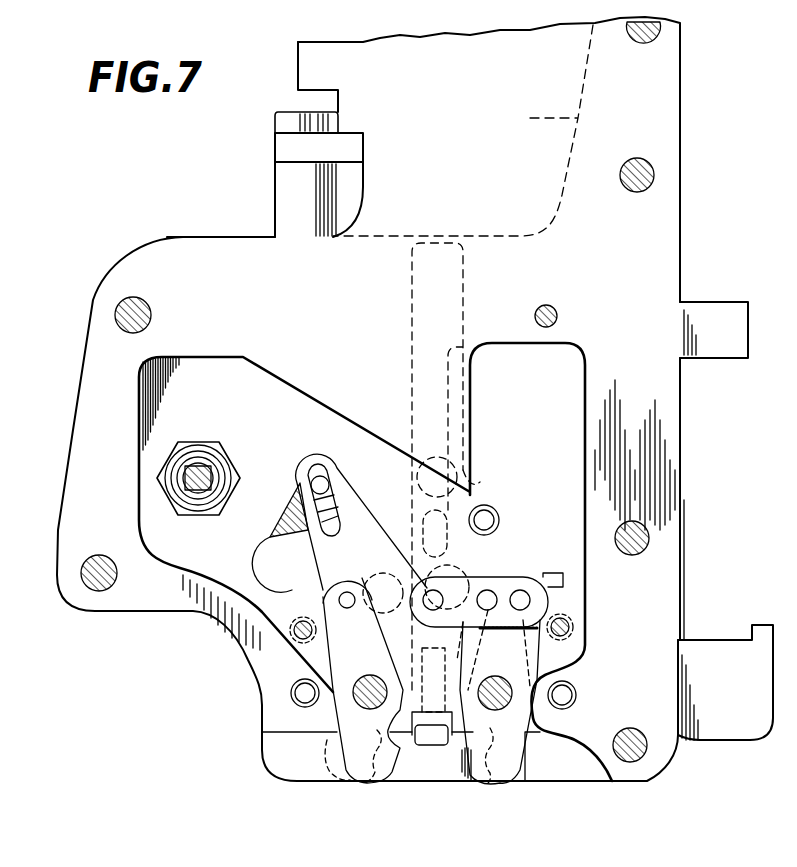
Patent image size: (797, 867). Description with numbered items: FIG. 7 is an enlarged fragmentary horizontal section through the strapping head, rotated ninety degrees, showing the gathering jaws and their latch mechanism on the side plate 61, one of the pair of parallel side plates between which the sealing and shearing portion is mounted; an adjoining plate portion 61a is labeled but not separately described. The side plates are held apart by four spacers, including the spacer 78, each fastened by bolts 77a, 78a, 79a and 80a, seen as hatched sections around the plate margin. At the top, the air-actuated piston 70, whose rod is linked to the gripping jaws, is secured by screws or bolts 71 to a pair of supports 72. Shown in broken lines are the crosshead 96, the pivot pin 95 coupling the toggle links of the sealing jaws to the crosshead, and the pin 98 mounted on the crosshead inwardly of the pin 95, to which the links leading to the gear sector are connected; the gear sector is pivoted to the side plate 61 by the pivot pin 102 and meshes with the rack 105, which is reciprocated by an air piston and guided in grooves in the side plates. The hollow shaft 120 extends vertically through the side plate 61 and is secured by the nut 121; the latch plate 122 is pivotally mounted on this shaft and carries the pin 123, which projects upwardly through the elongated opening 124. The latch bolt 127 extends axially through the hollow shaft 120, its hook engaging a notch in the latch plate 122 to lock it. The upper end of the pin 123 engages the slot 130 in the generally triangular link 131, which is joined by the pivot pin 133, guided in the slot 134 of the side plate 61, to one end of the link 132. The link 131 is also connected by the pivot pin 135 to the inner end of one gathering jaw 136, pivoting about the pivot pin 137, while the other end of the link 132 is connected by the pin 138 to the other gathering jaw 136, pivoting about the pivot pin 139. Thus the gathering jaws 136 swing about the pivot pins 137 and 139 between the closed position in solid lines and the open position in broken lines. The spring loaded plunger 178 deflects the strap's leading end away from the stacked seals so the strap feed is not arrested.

The side plate 61 is at (243, 370).
The cover plate 61a is at (185, 250).
The air-actuated piston 70 is at (306, 62).
The screws or bolts 71 is at (288, 117).
The supports 72 is at (288, 193).
The bolts 77a is at (648, 30).
The spacer 78 is at (708, 645).
The bolts 78a is at (640, 541).
The bolts 79a is at (120, 300).
The bolts 80a is at (100, 585).
The pivot pin 95 is at (464, 488).
The crosshead 96 is at (412, 307).
The pin 98 is at (432, 462).
The pivot pin 102 is at (500, 523).
The rack 105 is at (720, 310).
The hollow shaft 120 is at (195, 458).
The nut 121 is at (222, 468).
The latch plate 122 is at (292, 520).
The pin 123 is at (310, 485).
The elongated opening 124 is at (268, 556).
The latch bolt 127 is at (205, 500).
The slot 130 is at (318, 462).
The link 131 is at (360, 500).
The link 132 is at (487, 590).
The pivot pin 133 is at (430, 592).
The slot 134 is at (425, 541).
The pivot pin 135 is at (339, 599).
The gathering jaws 136 is at (362, 762).
The pivot pin 137 is at (376, 684).
The pin 138 is at (523, 594).
The pivot pin 139 is at (495, 684).
The spring loaded plunger 178 is at (433, 746).